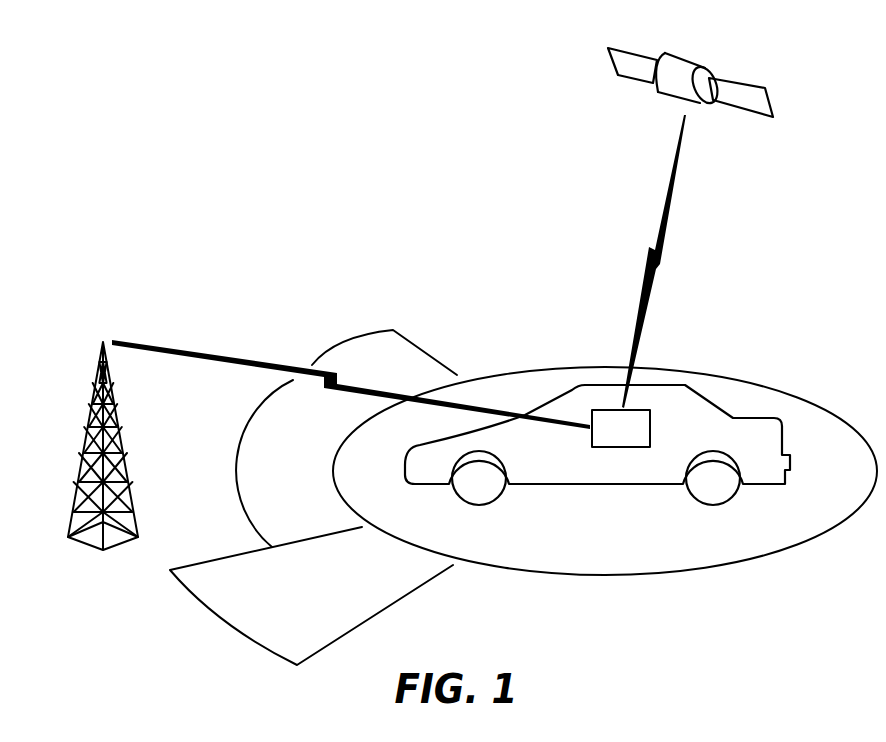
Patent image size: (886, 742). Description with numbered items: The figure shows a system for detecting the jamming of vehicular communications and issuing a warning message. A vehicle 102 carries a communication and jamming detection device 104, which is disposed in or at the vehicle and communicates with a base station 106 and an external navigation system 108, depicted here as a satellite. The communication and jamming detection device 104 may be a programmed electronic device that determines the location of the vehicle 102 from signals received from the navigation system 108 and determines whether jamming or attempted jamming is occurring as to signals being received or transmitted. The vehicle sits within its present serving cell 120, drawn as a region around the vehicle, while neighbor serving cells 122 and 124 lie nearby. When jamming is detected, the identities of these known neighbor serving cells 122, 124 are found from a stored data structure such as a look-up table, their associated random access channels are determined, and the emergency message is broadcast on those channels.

The vehicle 102 is at (587, 488).
The communication and jamming detection device 104 is at (603, 438).
The base station 106 is at (95, 394).
The external navigation system 108 is at (690, 61).
The present serving cell 120 is at (748, 562).
The neighbor serving cell 122 is at (417, 353).
The neighbor serving cell 124 is at (235, 562).